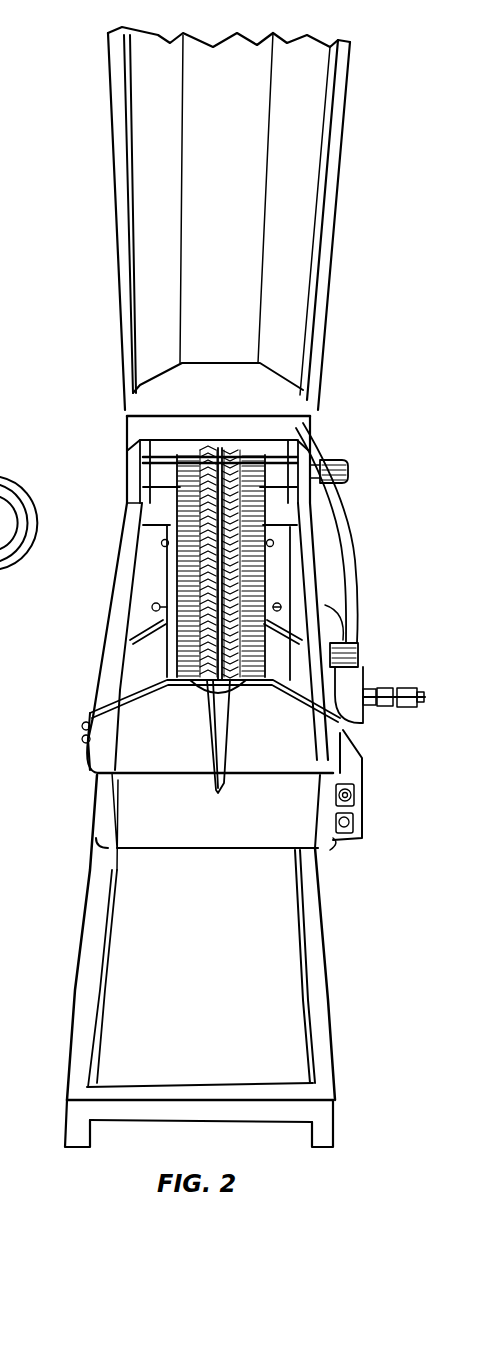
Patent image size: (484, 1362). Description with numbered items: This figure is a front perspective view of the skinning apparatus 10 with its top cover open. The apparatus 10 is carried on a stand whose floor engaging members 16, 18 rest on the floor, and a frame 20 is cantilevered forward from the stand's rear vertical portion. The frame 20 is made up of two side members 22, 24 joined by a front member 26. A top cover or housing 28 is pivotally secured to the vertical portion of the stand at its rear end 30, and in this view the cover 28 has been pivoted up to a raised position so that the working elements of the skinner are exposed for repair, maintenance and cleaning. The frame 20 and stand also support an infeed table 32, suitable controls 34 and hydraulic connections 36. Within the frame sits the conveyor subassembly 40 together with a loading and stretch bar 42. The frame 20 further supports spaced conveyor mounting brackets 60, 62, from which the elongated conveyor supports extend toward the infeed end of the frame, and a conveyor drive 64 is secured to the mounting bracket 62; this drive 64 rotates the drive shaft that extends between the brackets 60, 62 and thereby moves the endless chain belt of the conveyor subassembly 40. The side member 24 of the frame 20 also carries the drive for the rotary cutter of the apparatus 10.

The skinning apparatus 10 is at (72, 97).
The floor engaging member 16 is at (87, 982).
The floor engaging member 18 is at (318, 985).
The frame 20 is at (105, 533).
The side member 22 is at (110, 658).
The side member 24 is at (308, 577).
The front member 26 is at (128, 812).
The top cover 28 is at (292, 160).
The rear end 30 is at (273, 390).
The infeed table 32 is at (127, 755).
The controls 34 is at (327, 850).
The hydraulic connections 36 is at (385, 688).
The conveyor subassembly 40 is at (280, 518).
The loading and stretch bar 42 is at (213, 737).
The conveyor mounting bracket 60 is at (127, 457).
The conveyor mounting bracket 62 is at (303, 423).
The conveyor drive 64 is at (328, 457).